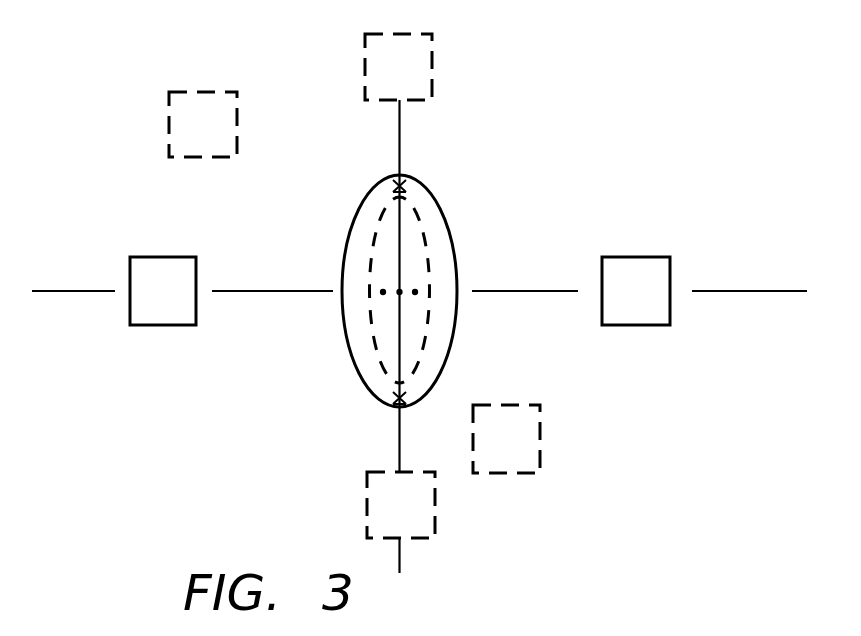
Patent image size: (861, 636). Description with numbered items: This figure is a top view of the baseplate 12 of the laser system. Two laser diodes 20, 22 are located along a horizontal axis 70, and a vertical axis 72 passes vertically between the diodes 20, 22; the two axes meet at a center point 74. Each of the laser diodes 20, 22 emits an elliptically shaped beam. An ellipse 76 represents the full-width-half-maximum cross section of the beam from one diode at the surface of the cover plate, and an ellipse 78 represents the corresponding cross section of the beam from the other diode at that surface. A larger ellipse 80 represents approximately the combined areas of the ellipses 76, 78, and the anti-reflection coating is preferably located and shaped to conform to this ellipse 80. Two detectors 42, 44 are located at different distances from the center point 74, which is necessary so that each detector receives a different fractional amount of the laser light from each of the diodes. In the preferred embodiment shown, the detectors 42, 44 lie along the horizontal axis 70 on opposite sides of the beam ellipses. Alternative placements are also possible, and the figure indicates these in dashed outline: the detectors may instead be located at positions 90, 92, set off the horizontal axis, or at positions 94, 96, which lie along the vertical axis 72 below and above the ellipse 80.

The baseplate 12 is at (216, 448).
The laser diode 20 is at (383, 294).
The laser diode 22 is at (416, 294).
The detector 42 is at (166, 266).
The detector 44 is at (643, 266).
The horizontal axis 70 is at (84, 291).
The vertical axis 72 is at (400, 148).
The center point 74 is at (400, 288).
The ellipse 76 is at (415, 207).
The ellipse 78 is at (373, 238).
The ellipse 80 is at (397, 178).
The alternative detector position 90 is at (200, 92).
The alternative detector position 92 is at (540, 431).
The alternative detector position 94 is at (367, 486).
The alternative detector position 96 is at (365, 66).